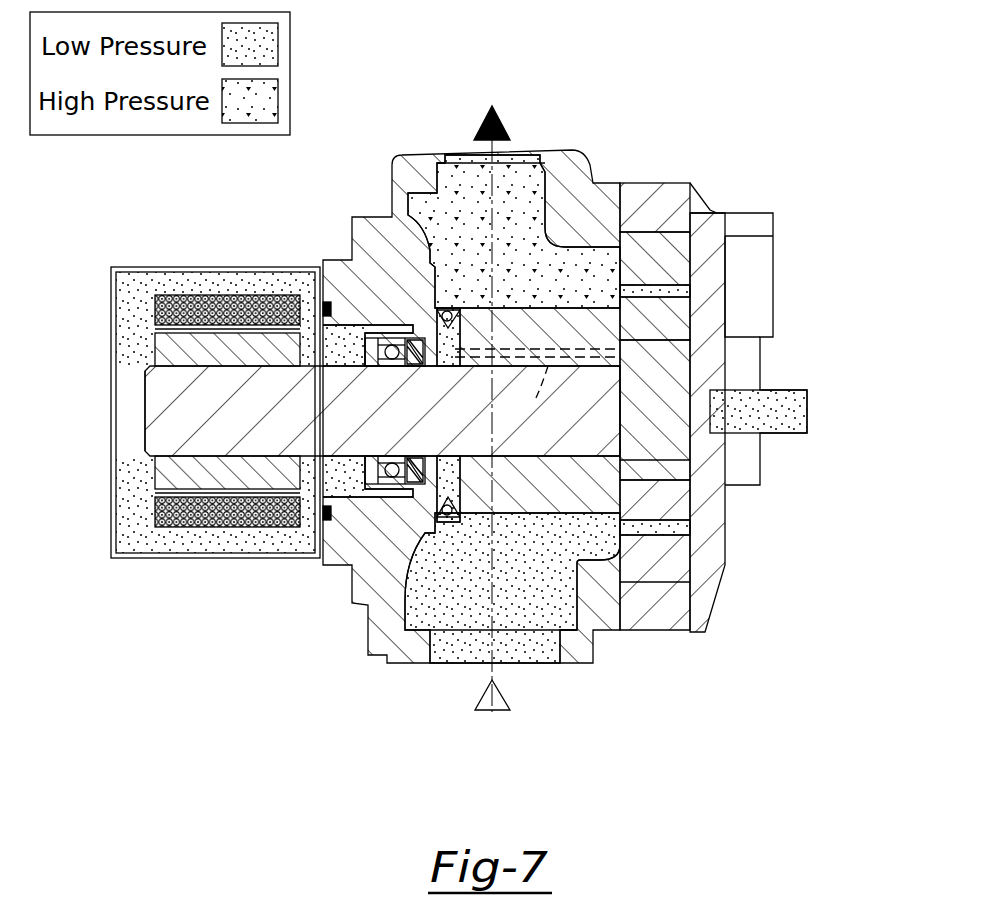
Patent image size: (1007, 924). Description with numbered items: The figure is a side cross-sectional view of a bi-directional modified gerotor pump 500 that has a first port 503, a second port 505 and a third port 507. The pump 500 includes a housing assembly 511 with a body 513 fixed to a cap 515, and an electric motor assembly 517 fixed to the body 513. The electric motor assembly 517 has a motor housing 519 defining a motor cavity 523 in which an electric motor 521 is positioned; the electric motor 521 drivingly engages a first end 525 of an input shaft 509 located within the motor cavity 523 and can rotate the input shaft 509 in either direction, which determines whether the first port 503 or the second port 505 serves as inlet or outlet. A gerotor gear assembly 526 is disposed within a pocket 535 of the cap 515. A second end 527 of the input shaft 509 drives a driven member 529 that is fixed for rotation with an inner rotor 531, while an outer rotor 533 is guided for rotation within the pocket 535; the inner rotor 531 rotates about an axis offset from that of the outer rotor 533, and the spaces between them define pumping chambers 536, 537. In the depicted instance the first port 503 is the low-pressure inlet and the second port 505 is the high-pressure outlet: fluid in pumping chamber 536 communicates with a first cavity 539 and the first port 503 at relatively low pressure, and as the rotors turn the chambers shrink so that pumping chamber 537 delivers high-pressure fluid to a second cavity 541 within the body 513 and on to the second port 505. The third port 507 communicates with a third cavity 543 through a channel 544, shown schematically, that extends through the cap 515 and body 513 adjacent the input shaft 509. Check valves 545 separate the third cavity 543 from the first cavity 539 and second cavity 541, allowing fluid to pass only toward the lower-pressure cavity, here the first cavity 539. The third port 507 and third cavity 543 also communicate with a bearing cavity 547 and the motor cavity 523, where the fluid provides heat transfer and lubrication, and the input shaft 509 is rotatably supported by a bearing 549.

The modified gerotor pump 500 is at (787, 146).
The first port 503 is at (548, 664).
The second port 505 is at (522, 162).
The third port 507 is at (752, 420).
The input shaft 509 is at (210, 433).
The housing assembly 511 is at (633, 174).
The body 513 is at (362, 233).
The cap 515 is at (660, 615).
The electric motor assembly 517 is at (140, 258).
The motor housing 519 is at (215, 267).
The electric motor 521 is at (165, 345).
The motor cavity 523 is at (128, 430).
The first end 525 is at (145, 411).
The gerotor gear assembly 526 is at (678, 590).
The second end 527 is at (667, 437).
The driven member 529 is at (667, 473).
The inner rotor 531 is at (672, 313).
The outer rotor 533 is at (680, 240).
The pocket 535 is at (655, 232).
The pumping chamber 536 is at (663, 530).
The pumping chamber 537 is at (672, 290).
The first cavity 539 is at (445, 622).
The second cavity 541 is at (465, 202).
The third cavity 543 is at (394, 370).
The channel 544 is at (537, 390).
The check valves 545 is at (436, 308).
The bearing cavity 547 is at (345, 492).
The bearing 549 is at (395, 480).